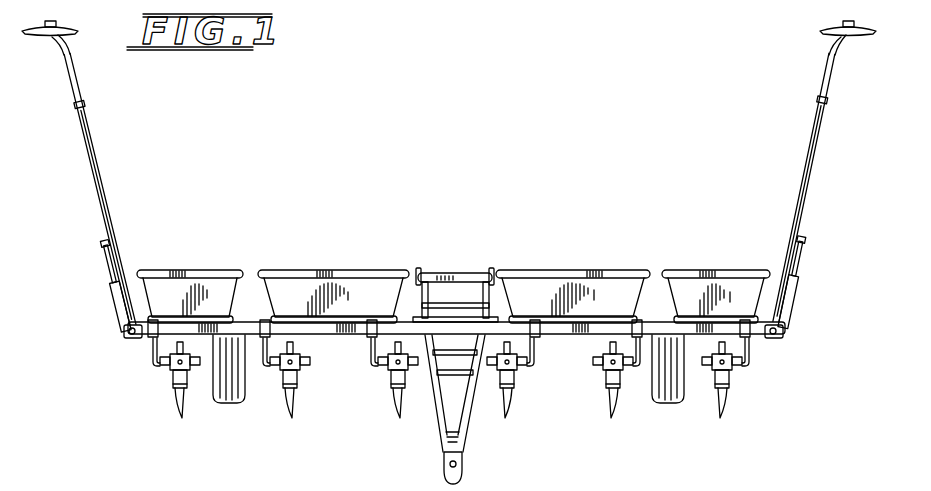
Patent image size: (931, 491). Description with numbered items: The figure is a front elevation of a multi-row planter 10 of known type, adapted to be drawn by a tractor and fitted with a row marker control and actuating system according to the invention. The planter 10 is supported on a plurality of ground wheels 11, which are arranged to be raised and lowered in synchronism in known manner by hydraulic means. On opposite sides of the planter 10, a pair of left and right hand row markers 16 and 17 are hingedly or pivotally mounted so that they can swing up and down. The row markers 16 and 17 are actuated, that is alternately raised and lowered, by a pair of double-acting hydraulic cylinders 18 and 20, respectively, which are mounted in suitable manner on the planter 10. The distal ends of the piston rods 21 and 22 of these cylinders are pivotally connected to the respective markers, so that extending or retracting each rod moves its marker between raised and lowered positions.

The multi-row planter 10 is at (525, 246).
The ground wheels 11 is at (233, 406).
The left hand row marker 16 is at (800, 184).
The right hand row marker 17 is at (93, 184).
The double-acting hydraulic cylinder 18 is at (785, 303).
The double-acting hydraulic cylinder 20 is at (117, 311).
The piston rod 21 is at (796, 266).
The piston rod 22 is at (108, 262).